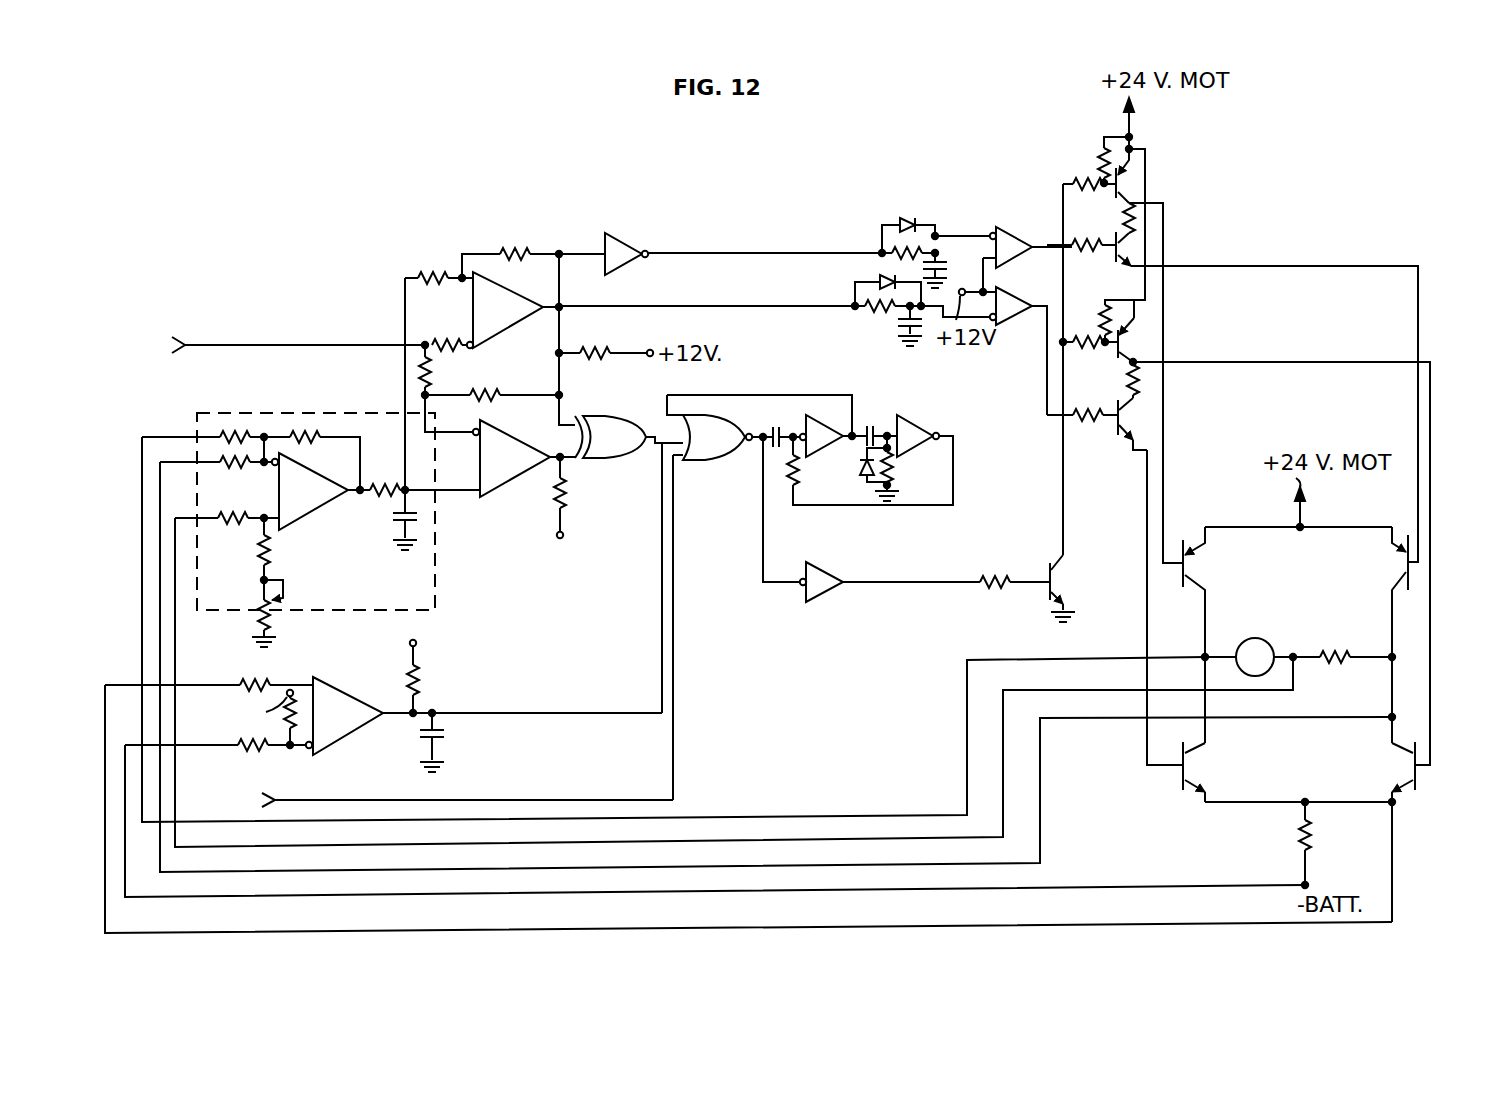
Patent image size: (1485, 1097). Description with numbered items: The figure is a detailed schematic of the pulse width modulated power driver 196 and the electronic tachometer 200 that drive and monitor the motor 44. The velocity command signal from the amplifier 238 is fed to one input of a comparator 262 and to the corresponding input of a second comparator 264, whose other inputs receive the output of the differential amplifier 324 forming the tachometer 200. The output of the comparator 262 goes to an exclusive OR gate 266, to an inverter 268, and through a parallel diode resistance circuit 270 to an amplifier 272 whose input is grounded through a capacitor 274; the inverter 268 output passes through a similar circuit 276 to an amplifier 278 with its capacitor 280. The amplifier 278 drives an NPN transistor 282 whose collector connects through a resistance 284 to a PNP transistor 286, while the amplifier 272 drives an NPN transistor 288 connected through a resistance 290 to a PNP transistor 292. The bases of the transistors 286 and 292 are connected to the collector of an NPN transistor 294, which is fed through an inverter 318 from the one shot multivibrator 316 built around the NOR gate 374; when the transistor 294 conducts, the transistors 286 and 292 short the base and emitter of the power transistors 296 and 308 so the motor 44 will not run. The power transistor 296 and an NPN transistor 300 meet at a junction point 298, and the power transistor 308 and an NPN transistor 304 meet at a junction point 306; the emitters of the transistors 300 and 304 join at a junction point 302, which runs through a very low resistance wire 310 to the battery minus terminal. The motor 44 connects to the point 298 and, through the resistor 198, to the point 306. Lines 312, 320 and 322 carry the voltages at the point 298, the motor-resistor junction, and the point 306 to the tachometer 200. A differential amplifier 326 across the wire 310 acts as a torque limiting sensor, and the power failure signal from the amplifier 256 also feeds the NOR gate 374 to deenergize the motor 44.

The amplifier 238 is at (262, 358).
The electronic tachometer 200 is at (358, 412).
The comparator 262 is at (508, 318).
The second comparator 264 is at (505, 480).
The exclusive OR gate 266 is at (612, 458).
The inverter 268 is at (630, 245).
The parallel diode resistance circuit 270 is at (875, 309).
The amplifier 272 is at (1020, 314).
The capacitor 274 is at (905, 326).
The parallel diode resistance circuit 276 is at (899, 214).
The amplifier 278 is at (1008, 228).
The capacitor 280 is at (940, 233).
The NPN transistor 282 is at (1115, 232).
The resistance 284 is at (1135, 215).
The PNP transistor 286 is at (1120, 185).
The NPN transistor 288 is at (1117, 428).
The resistance 290 is at (1137, 380).
The PNP transistor 292 is at (1122, 340).
The NPN transistor 294 is at (1000, 575).
The PNP transistor 296 is at (1195, 565).
The junction point 298 is at (1205, 655).
The NPN transistor 300 is at (1190, 765).
The junction point 302 is at (1305, 800).
The NPN transistor 304 is at (1410, 765).
The junction point 306 is at (1392, 655).
The PNP transistor 308 is at (1400, 558).
The low resistance wire 310 is at (1312, 845).
The line 312 is at (1045, 658).
The multi-vibrator circuit 316 is at (873, 412).
The inverter 318 is at (838, 575).
The line 320 is at (1090, 690).
The line 322 is at (1120, 718).
The differential amplifier 324 is at (312, 505).
The differential amplifier 326 is at (345, 700).
The NOR gate 374 is at (708, 460).
The pulse width modulated power driver circuit 196 is at (975, 394).
The motor 44 is at (1272, 645).
The low resistance 198 is at (1356, 675).
The amplifier 256 is at (428, 795).